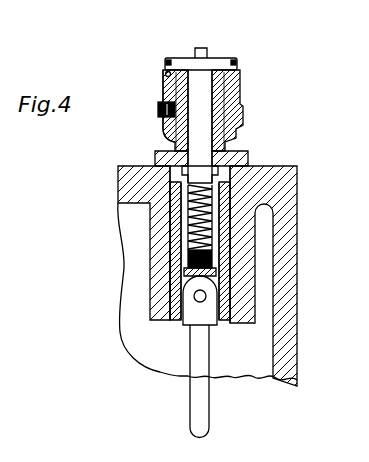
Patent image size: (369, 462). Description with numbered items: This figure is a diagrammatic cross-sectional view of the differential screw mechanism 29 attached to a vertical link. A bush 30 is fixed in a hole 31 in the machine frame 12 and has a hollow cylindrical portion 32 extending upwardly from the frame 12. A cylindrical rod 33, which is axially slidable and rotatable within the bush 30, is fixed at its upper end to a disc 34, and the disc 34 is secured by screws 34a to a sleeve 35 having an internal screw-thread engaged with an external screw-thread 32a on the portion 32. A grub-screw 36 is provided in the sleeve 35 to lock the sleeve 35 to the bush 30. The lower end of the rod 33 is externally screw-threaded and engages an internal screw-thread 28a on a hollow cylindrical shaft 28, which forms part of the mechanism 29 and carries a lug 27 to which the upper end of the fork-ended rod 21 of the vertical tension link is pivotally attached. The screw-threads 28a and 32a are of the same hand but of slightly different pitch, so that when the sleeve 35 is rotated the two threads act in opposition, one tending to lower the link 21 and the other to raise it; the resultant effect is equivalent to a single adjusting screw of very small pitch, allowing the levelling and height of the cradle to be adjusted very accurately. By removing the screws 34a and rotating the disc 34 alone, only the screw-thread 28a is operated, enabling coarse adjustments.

The machine frame 12 is at (283, 183).
The fork-ended rod 21 is at (195, 405).
The lug 27 is at (215, 290).
The hollow cylindrical shaft 28 is at (183, 277).
The internal screw-thread 28a is at (125, 232).
The differential screw mechanism 29 is at (246, 109).
The bush 30 is at (155, 158).
The hole 31 is at (118, 185).
The hollow cylindrical portion 32 is at (165, 84).
The external screw-thread 32a is at (165, 136).
The cylindrical rod 33 is at (202, 92).
The disc 34 is at (189, 62).
The screws 34a is at (167, 61).
The sleeve 35 is at (164, 117).
The grub-screw 36 is at (162, 108).